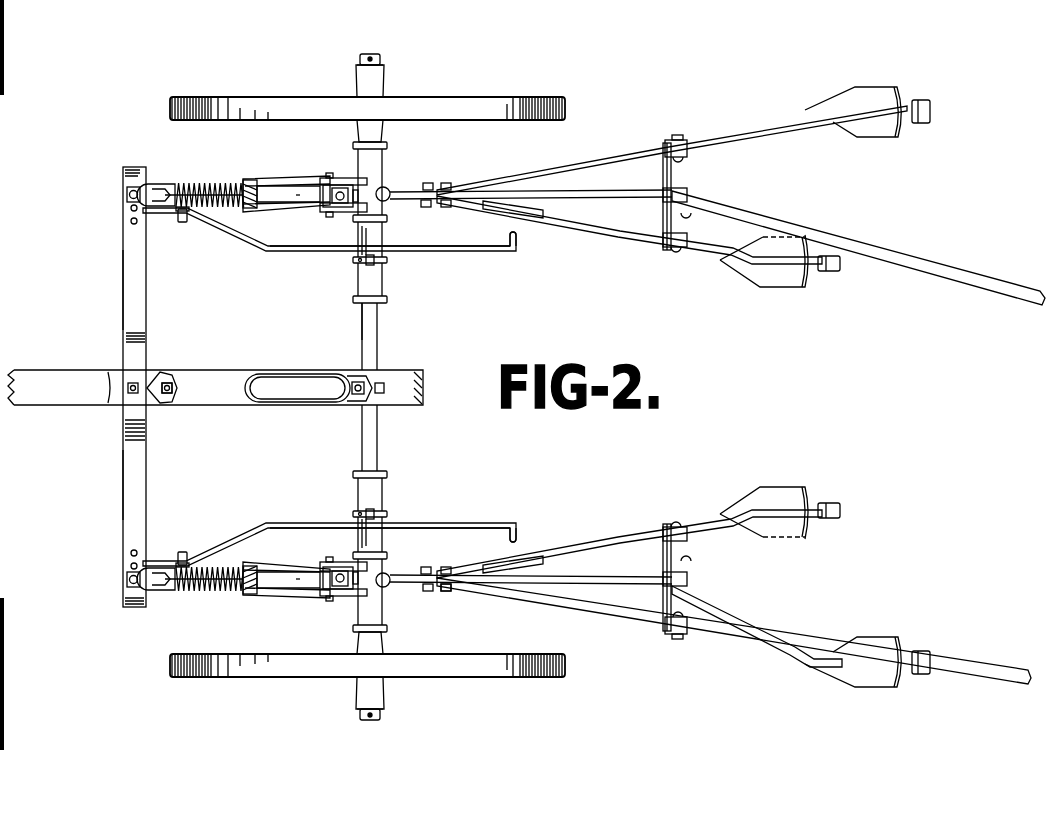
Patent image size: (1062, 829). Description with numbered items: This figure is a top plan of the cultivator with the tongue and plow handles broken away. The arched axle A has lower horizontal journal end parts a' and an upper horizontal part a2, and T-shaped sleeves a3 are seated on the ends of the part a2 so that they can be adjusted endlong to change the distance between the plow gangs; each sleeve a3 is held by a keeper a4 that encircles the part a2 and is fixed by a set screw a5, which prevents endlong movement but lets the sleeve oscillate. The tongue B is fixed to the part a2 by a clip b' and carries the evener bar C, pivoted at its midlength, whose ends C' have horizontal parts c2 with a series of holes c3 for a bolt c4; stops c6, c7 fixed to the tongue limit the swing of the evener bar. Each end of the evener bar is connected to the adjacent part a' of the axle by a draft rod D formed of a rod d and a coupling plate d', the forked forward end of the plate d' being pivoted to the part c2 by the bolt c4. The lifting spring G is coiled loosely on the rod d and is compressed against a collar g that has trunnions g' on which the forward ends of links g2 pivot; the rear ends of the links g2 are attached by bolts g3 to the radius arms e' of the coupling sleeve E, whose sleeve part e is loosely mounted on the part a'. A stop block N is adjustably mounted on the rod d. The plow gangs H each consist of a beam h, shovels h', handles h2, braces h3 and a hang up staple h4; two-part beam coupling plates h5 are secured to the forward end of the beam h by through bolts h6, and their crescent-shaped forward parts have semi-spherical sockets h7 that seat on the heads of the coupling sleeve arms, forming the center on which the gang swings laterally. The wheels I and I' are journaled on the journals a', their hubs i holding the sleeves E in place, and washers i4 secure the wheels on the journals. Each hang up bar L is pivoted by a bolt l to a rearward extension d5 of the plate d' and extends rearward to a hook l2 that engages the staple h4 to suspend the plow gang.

The arched axle A is at (349, 387).
The lower horizontal journal end part of the axle a' is at (377, 379).
The upper horizontal part of the axle a2 is at (384, 322).
The T-shaped sleeve a3 is at (381, 277).
The keeper a4 is at (365, 263).
The set screw a5 is at (361, 266).
The wheel hub i is at (357, 131).
The washer i4 is at (381, 60).
The wheel I is at (367, 680).
The wheel I' is at (367, 95).
The sleeve part of the coupling sleeve e is at (380, 379).
The radius arm e' is at (340, 391).
The coupling sleeve E is at (387, 382).
The plow beam h is at (672, 386).
The plow or shovel h' is at (825, 400).
The handle h2 is at (899, 267).
The brace h3 is at (673, 192).
The hang up staple h4 is at (535, 226).
The beam coupling plate h5 is at (421, 186).
The through bolt h6 is at (450, 591).
The semi-spherical socket h7 is at (392, 189).
The plow gang H is at (659, 375).
The tongue B is at (57, 368).
The clip b' is at (374, 403).
The evener bar C is at (113, 387).
The end of the evener bar C' is at (108, 385).
The horizontal part of the evener bar end c2 is at (128, 230).
The holes c3 is at (143, 215).
The bolt c4 is at (125, 195).
The stop c6 is at (164, 398).
The stop c7 is at (152, 372).
The rod of the draft rod d is at (288, 405).
The coupling plate d' is at (156, 391).
The rearward extension of the coupling plate d5 is at (186, 219).
The draft rod D is at (286, 379).
The stop block N is at (302, 387).
The lifting spring G is at (215, 185).
The collar g is at (204, 408).
The trunnion g' is at (247, 390).
The link g2 is at (264, 179).
The bolt g3 is at (327, 175).
The bolt or rivet l is at (184, 222).
The hook l2 is at (518, 251).
The hang up bar L is at (458, 252).